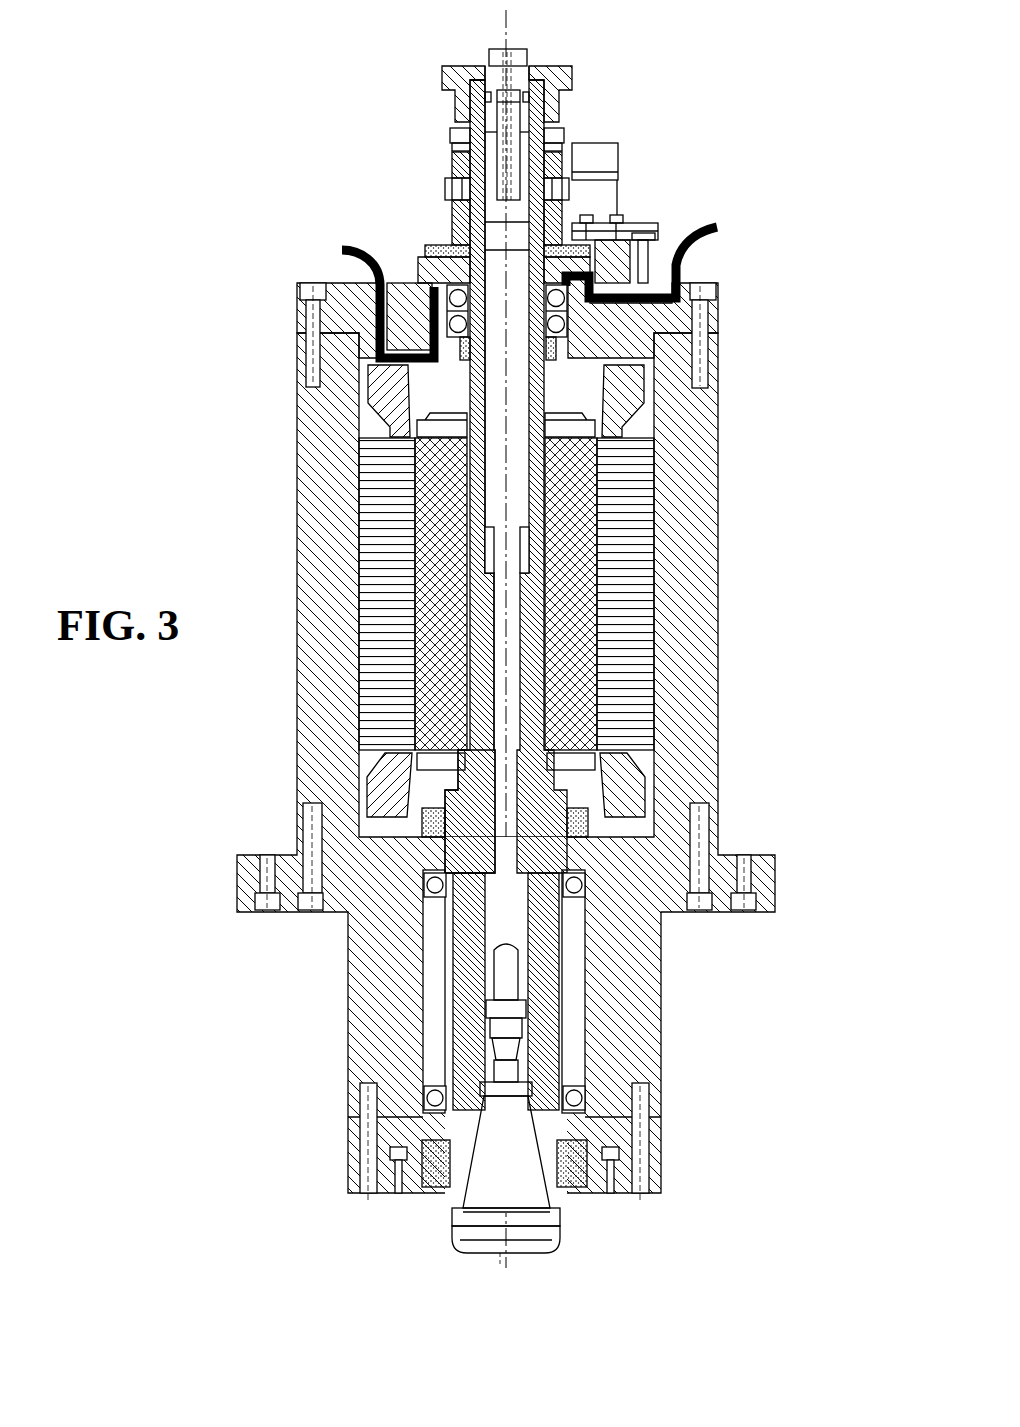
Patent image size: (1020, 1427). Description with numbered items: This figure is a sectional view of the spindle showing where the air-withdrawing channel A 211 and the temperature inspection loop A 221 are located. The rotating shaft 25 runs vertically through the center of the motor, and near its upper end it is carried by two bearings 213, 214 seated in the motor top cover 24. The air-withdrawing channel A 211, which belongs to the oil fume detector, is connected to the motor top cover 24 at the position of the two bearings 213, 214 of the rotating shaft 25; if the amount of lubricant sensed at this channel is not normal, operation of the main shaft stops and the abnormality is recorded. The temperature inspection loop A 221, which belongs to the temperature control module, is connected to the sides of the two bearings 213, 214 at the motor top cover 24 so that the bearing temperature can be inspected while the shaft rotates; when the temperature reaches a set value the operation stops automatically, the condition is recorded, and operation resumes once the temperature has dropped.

The motor top cover 24 is at (668, 323).
The rotating shaft 25 is at (557, 377).
The air-withdrawing channel A 211 is at (618, 280).
The bearing 213 is at (592, 252).
The bearing 214 is at (447, 327).
The temperature inspection loop A 221 is at (405, 278).